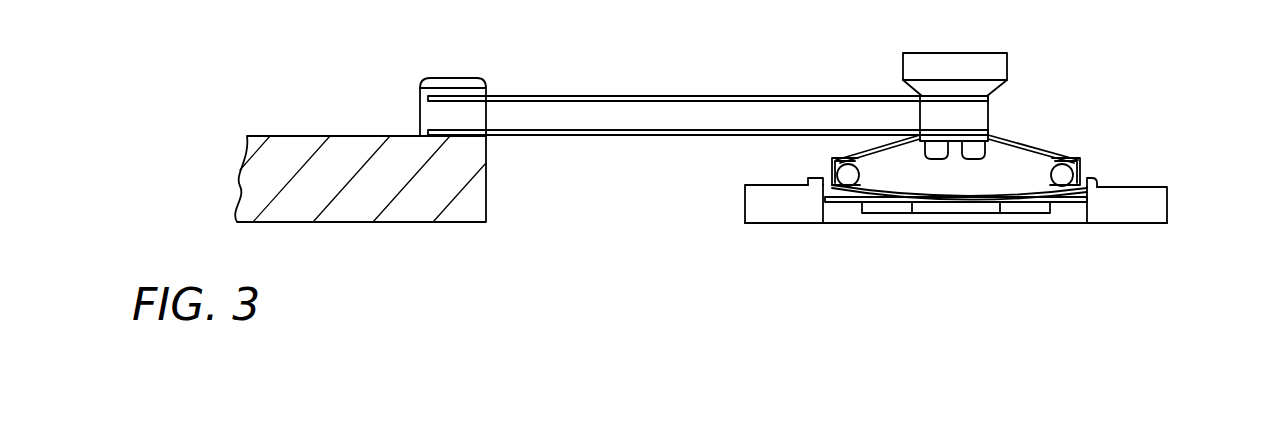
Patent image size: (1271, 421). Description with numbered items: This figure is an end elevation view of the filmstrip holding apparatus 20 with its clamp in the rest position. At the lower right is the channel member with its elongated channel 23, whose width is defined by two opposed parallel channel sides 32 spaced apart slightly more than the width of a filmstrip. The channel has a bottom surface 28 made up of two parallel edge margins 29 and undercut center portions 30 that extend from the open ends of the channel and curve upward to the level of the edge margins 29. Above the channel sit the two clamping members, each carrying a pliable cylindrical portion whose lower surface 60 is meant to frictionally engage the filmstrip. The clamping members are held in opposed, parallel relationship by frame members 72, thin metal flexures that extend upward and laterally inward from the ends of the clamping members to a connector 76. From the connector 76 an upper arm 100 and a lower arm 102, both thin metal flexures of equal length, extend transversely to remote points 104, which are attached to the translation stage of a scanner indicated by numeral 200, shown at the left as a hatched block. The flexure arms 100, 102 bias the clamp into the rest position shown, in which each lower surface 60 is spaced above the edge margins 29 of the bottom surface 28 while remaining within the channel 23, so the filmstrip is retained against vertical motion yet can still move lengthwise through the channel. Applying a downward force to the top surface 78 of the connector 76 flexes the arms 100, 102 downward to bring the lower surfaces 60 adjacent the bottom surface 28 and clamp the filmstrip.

The filmstrip holding apparatus 20 is at (1157, 200).
The elongated channel 23 is at (1063, 197).
The bottom surface 28 is at (1080, 202).
The edge margins 29 is at (830, 222).
The undercut center portions 30 is at (937, 205).
The channel sides 32 is at (820, 196).
The lower surface 60 is at (849, 163).
The frame members 72 is at (1015, 148).
The connector 76 is at (978, 117).
The top surface 78 is at (958, 60).
The upper arm 100 is at (607, 96).
The lower arm 102 is at (593, 135).
The remote points 104 is at (483, 78).
The scanner translation stage 200 is at (415, 222).